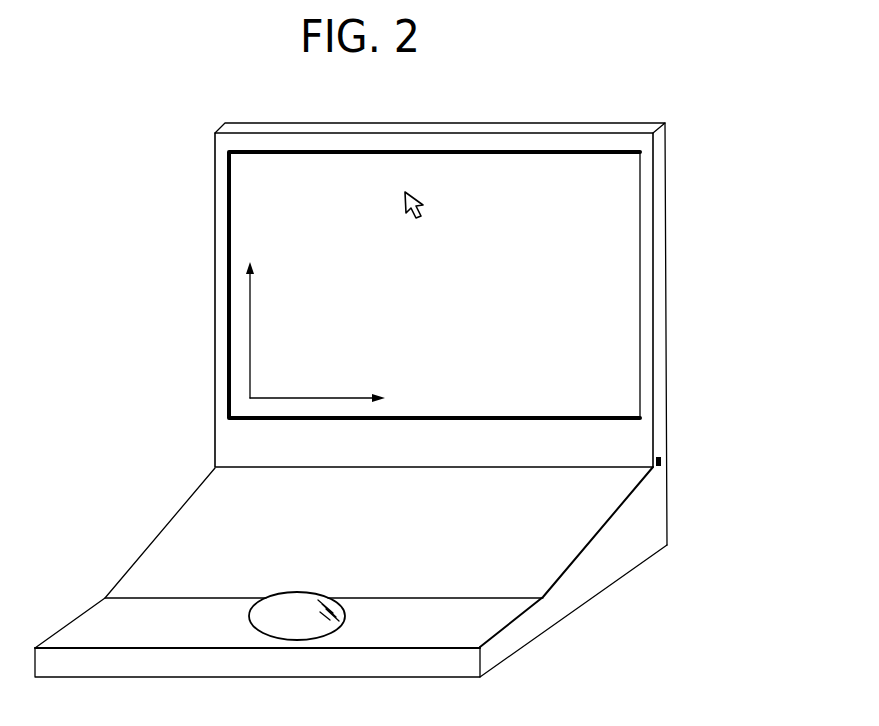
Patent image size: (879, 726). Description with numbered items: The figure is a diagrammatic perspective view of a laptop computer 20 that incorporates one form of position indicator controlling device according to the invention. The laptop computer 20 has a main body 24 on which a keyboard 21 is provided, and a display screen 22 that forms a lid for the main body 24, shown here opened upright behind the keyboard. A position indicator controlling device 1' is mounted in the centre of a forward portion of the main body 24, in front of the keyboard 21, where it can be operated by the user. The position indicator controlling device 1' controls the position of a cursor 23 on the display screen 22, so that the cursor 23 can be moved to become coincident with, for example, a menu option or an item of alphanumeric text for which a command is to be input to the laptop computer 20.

The laptop computer 20 is at (676, 297).
The keyboard 21 is at (210, 518).
The display screen 22 is at (448, 300).
The cursor 23 is at (424, 211).
The main body 24 is at (592, 577).
The position indicator controlling device 1' is at (303, 591).